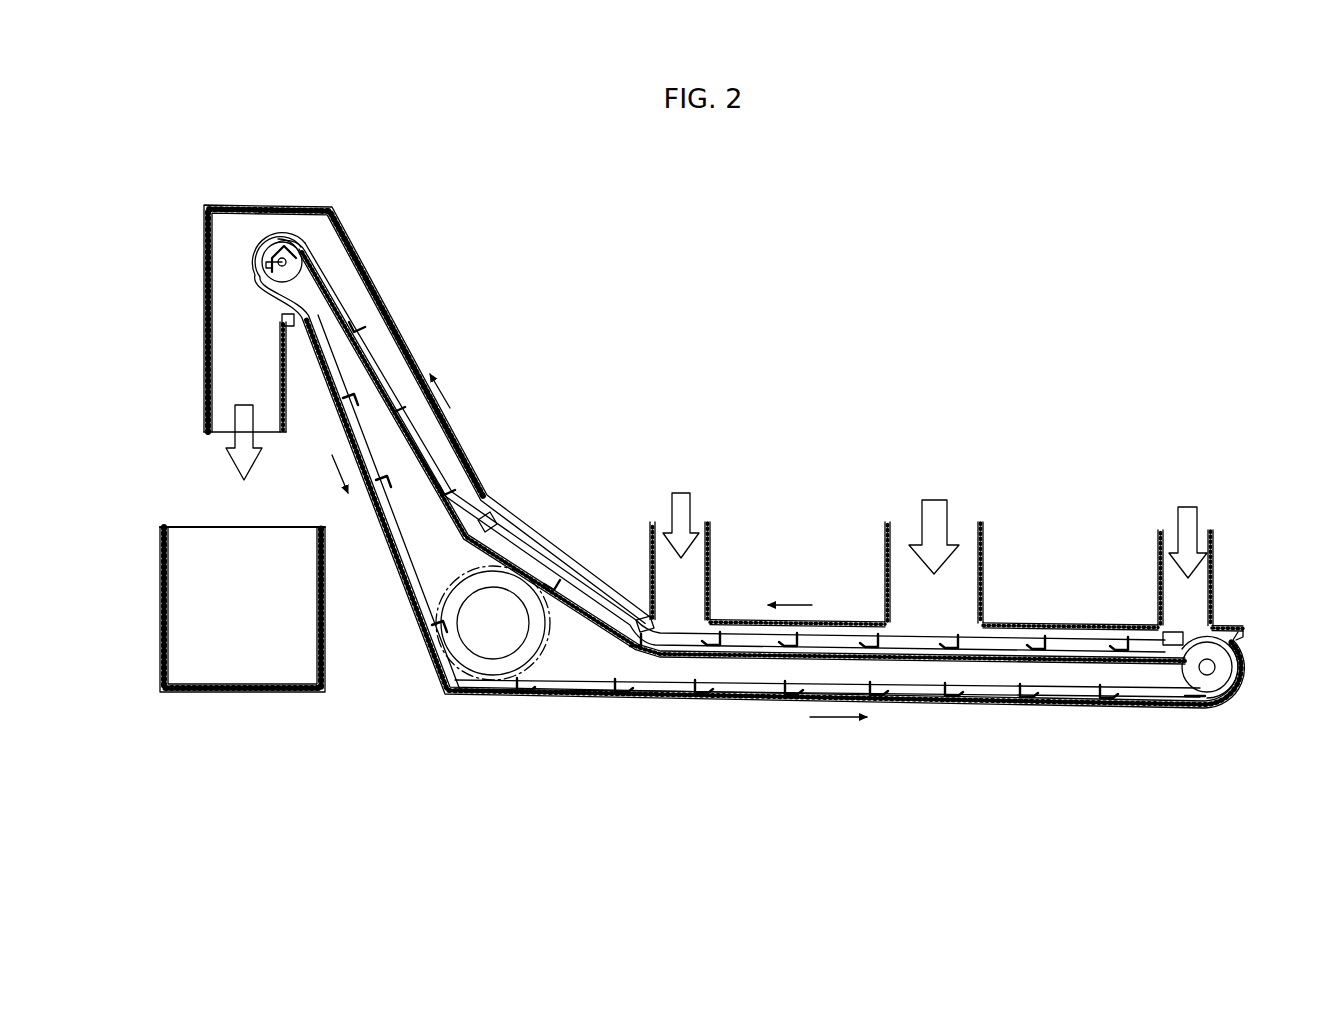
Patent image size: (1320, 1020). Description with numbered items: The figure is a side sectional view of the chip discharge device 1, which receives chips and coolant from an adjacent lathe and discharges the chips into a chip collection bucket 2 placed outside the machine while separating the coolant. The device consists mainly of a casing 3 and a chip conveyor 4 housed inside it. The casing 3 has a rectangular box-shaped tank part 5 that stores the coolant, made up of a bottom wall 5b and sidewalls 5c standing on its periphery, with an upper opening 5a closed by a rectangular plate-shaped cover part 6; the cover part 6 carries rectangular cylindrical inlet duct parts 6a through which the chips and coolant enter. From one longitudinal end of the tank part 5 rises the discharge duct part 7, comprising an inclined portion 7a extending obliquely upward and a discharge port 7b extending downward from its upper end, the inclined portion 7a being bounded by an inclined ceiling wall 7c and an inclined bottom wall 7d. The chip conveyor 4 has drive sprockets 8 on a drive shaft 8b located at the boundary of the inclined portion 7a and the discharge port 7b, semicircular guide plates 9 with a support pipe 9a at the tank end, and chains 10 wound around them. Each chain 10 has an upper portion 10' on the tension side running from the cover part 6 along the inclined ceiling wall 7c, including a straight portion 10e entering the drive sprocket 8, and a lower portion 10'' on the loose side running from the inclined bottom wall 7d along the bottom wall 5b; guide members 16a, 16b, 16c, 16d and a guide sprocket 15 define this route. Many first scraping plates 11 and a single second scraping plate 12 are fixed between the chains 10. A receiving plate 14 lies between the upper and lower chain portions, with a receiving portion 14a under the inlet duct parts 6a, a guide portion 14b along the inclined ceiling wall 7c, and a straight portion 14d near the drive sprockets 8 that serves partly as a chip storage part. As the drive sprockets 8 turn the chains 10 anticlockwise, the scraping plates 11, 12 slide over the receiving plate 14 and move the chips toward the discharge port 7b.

The chip discharge device 1 is at (738, 293).
The chip collection bucket 2 is at (161, 585).
The casing 3 is at (985, 711).
The chip conveyor 4 is at (1013, 638).
The tank part 5 is at (1056, 710).
The upper opening 5a is at (1231, 627).
The bottom wall 5b is at (905, 706).
The sidewalls 5c is at (748, 690).
The cover part 6 is at (1079, 620).
The inlet duct parts 6a is at (708, 552).
The discharge duct part 7 is at (471, 458).
The inclined portion 7a is at (403, 328).
The discharge port 7b is at (200, 390).
The inclined ceiling wall 7c is at (418, 357).
The inclined bottom wall 7d is at (335, 432).
The drive sprockets 8 is at (286, 240).
The drive shaft 8b is at (264, 262).
The guide plates 9 is at (1212, 688).
The support pipe 9a is at (1216, 667).
The chains 10 is at (768, 470).
The upper portion 10' is at (934, 608).
The lower portion 10'' is at (864, 735).
The straight portion 10e is at (323, 258).
The first scraping plates 11 is at (563, 572).
The second scraping plate 12 is at (794, 636).
The receiving plate 14 is at (918, 666).
The receiving portion 14a is at (820, 665).
The guide portion 14b is at (421, 479).
The straight portion 14d is at (283, 243).
The guide sprocket 15 is at (478, 657).
The guide member 16a is at (1163, 638).
The guide member 16b is at (637, 622).
The guide member 16c is at (491, 520).
The guide member 16d is at (283, 318).